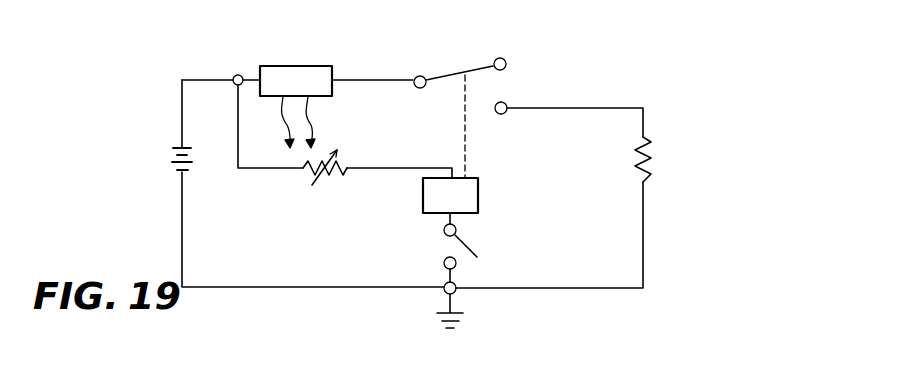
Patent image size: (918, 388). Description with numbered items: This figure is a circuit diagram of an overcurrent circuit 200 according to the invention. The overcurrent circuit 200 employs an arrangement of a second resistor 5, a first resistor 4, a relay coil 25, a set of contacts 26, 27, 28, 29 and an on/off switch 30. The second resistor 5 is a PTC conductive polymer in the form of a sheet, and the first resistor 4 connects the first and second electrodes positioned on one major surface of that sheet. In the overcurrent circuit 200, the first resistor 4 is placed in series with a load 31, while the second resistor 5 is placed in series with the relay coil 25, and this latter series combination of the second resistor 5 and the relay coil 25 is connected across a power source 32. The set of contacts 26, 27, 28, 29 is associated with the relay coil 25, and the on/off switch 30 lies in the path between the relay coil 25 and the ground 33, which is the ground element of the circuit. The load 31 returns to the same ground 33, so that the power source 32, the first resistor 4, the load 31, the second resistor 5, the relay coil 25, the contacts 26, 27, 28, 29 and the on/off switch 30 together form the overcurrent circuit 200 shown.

The overcurrent circuit 200 is at (672, 66).
The first resistor 4 is at (303, 91).
The second resistor 5 is at (309, 173).
The relay coil 25 is at (465, 207).
The contact 26 is at (415, 76).
The contact 27 is at (506, 68).
The contact 28 is at (504, 114).
The contact 29 is at (470, 71).
The on/off switch 30 is at (477, 250).
The load 31 is at (658, 147).
The power source 32 is at (176, 150).
The ground 33 is at (461, 315).